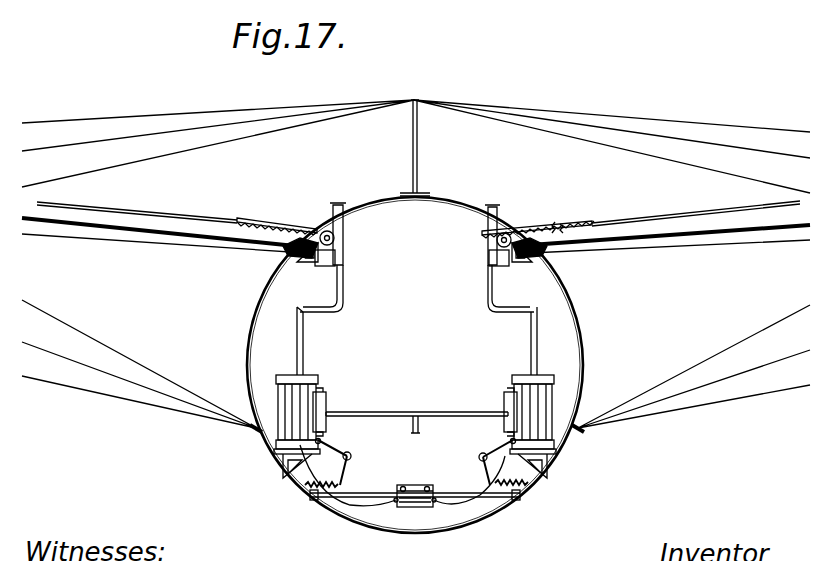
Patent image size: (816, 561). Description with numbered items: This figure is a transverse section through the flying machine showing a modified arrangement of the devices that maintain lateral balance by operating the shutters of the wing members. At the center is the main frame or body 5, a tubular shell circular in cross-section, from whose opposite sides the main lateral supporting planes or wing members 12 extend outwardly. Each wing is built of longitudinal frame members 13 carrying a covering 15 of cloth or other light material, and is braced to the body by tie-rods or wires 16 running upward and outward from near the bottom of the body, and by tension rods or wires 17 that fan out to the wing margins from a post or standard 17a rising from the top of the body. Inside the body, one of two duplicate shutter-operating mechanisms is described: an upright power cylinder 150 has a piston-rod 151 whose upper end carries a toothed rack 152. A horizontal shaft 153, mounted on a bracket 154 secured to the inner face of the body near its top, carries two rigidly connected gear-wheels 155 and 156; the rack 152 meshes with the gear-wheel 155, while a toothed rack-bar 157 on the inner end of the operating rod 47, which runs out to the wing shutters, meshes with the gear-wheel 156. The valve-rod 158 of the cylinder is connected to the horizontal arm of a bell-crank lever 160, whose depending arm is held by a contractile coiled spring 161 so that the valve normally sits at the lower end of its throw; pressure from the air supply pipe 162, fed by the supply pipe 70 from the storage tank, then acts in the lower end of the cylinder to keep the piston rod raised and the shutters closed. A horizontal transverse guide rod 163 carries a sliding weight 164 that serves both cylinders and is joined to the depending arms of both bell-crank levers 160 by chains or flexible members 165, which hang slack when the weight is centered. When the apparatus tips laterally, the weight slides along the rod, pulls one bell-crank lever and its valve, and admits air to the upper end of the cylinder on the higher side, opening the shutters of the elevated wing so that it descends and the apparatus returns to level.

The main frame or body 5 is at (440, 198).
The main lateral supporting planes or wing members 12 is at (97, 250).
The longitudinal frame members 13 is at (150, 244).
The covering 15 is at (85, 221).
The tie-rods or wires 16 is at (60, 323).
The tension rods or wires 17 is at (45, 182).
The post or standard 17a is at (418, 104).
The operating rod 47 is at (677, 201).
The supply pipe 70 is at (413, 431).
The power cylinder 150 is at (556, 390).
The piston-rod 151 is at (297, 340).
The toothed rack 152 is at (343, 280).
The horizontal shaft 153 is at (285, 250).
The bracket 154 is at (306, 260).
The gear-wheel 155 is at (345, 250).
The gear-wheel 156 is at (343, 237).
The toothed rack-bar 157 is at (281, 222).
The valve-rod 158 is at (322, 390).
The bell-crank lever 160 is at (340, 452).
The contractile coiled spring 161 is at (310, 490).
The air supply pipe 162 is at (445, 405).
The horizontal transverse guide rod 163 is at (378, 493).
The sliding weight 164 is at (418, 484).
The chains or flexible members 165 is at (366, 506).